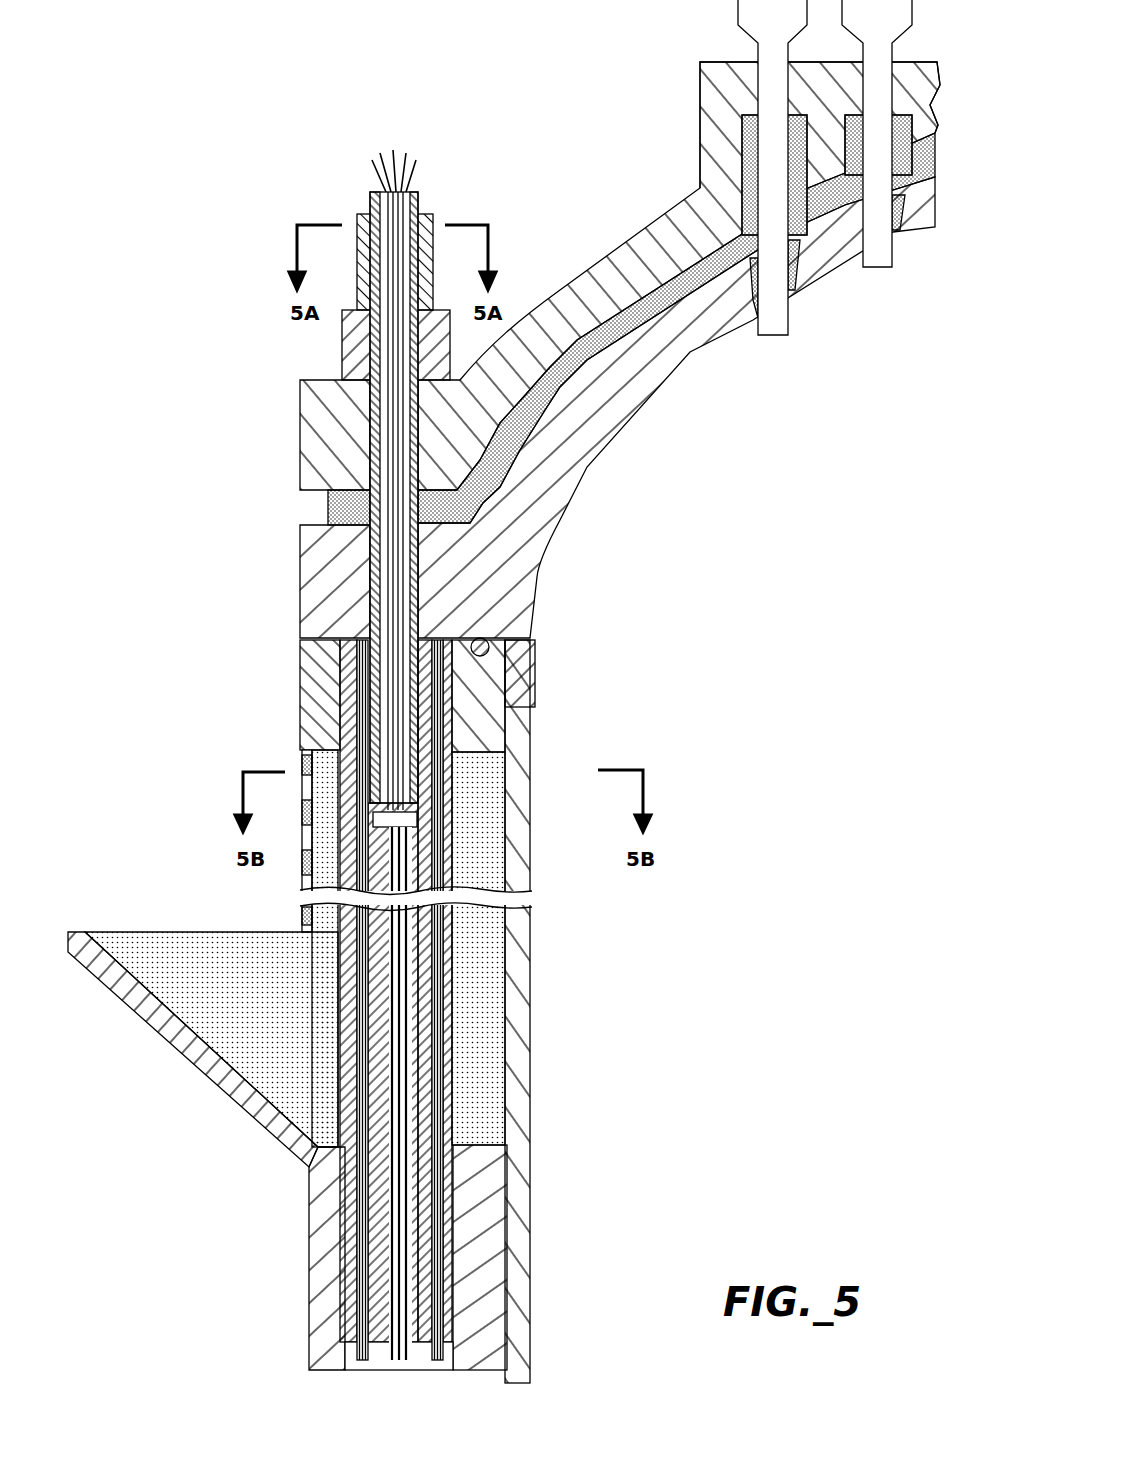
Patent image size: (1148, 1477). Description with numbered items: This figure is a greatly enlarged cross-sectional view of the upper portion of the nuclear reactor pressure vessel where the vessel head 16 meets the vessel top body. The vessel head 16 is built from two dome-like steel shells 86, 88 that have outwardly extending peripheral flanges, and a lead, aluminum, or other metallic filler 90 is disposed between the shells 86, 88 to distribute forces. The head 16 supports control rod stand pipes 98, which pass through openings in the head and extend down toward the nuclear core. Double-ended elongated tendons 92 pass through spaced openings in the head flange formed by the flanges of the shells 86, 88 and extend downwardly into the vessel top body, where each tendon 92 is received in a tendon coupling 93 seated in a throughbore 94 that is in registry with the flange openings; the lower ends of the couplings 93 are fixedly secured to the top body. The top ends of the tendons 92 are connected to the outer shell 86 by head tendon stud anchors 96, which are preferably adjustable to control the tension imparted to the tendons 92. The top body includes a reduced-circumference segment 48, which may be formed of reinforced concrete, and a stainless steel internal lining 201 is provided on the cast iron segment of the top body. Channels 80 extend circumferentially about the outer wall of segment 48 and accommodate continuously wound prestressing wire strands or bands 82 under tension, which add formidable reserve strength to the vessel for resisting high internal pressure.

The vessel head 16 is at (700, 145).
The dome-like steel shell 86 is at (640, 222).
The metallic filler 90 is at (617, 300).
The dome-like steel shell 88 is at (620, 410).
The control rod stand pipes 98 is at (873, 268).
The head tendon stud anchors 96 is at (350, 357).
The tendons 92 is at (383, 570).
The tendon coupling 93 is at (340, 670).
The channels 80 is at (305, 887).
The prestressing wire strands or bands 82 is at (303, 916).
The segment 48 is at (228, 950).
The throughbores 94 is at (457, 955).
The internal lining 201 is at (516, 1008).